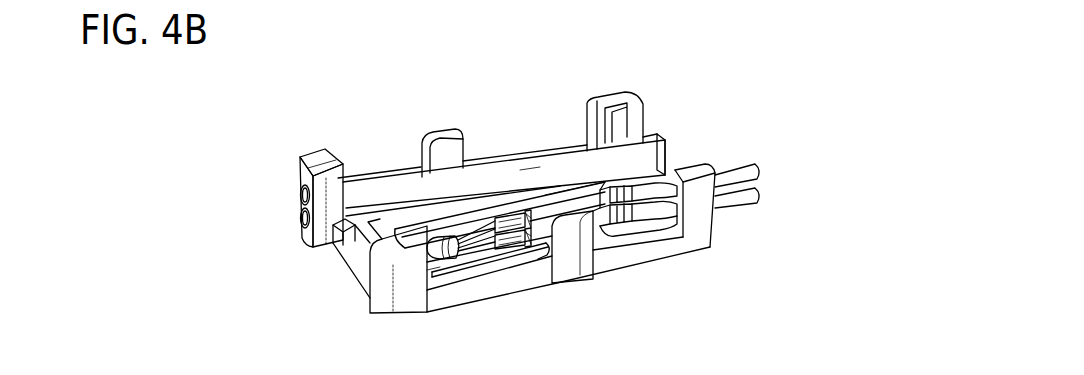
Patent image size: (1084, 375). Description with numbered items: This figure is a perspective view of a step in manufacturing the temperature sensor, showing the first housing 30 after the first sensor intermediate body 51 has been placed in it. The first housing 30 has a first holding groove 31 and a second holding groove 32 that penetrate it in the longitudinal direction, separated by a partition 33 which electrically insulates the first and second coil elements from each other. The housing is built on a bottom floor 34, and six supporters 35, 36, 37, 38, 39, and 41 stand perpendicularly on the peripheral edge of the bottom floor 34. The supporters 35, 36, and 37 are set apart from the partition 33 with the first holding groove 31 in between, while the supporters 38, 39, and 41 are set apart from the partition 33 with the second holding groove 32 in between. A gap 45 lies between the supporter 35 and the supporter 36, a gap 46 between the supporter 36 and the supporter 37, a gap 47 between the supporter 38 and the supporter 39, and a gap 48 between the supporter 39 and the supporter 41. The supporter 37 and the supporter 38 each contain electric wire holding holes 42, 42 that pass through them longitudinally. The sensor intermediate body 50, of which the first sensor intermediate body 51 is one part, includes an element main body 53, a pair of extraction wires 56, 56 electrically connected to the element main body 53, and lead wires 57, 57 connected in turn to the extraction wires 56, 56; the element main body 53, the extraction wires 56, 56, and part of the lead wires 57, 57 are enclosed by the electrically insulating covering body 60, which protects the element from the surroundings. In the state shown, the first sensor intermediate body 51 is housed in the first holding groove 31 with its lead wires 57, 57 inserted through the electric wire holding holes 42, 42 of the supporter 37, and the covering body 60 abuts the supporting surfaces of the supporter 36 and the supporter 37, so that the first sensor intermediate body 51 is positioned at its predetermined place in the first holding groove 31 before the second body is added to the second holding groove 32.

The first housing 30 is at (581, 284).
The first holding groove 31 is at (370, 278).
The second holding groove 32 is at (335, 238).
The partition 33 is at (668, 148).
The bottom floor 34 is at (466, 263).
The supporter 35 is at (437, 274).
The supporter 36 is at (613, 230).
The supporter 37 is at (711, 168).
The supporter 38 is at (322, 150).
The supporter 39 is at (445, 128).
The supporter 41 is at (606, 97).
The electric wire holding holes 42 is at (300, 190).
The gap 45 is at (540, 262).
The gap 46 is at (650, 233).
The gap 47 is at (384, 180).
The gap 48 is at (527, 165).
The sensor intermediate body 50 is at (500, 164).
The first sensor intermediate body 51 is at (524, 203).
The element main body 53 is at (455, 262).
The extraction wires 56 is at (492, 247).
The lead wires 57 is at (745, 164).
The covering body 60 is at (563, 198).